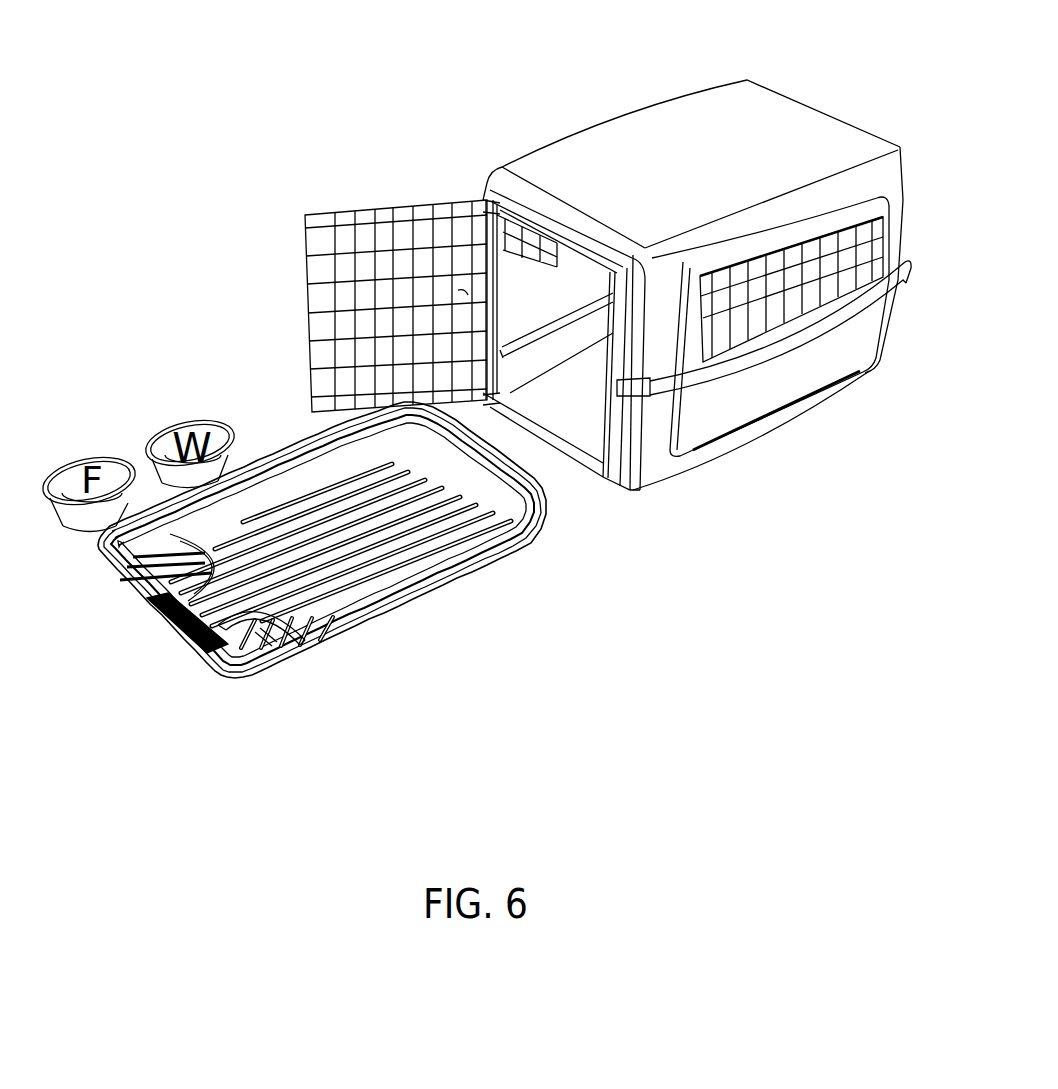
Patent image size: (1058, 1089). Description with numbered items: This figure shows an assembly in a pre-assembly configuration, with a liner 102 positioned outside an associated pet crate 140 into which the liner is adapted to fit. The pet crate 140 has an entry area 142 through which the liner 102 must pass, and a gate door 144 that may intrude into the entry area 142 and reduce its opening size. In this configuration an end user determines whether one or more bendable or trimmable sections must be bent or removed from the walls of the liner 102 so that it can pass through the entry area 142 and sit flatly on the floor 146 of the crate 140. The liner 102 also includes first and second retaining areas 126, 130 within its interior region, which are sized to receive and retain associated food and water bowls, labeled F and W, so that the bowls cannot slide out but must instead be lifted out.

The liner 102 is at (397, 613).
The first retaining area 126 is at (257, 631).
The second retaining area 130 is at (142, 578).
The pet crate 140 is at (619, 116).
The entry area 142 is at (550, 428).
The gate door 144 is at (305, 213).
The floor 146 is at (586, 427).